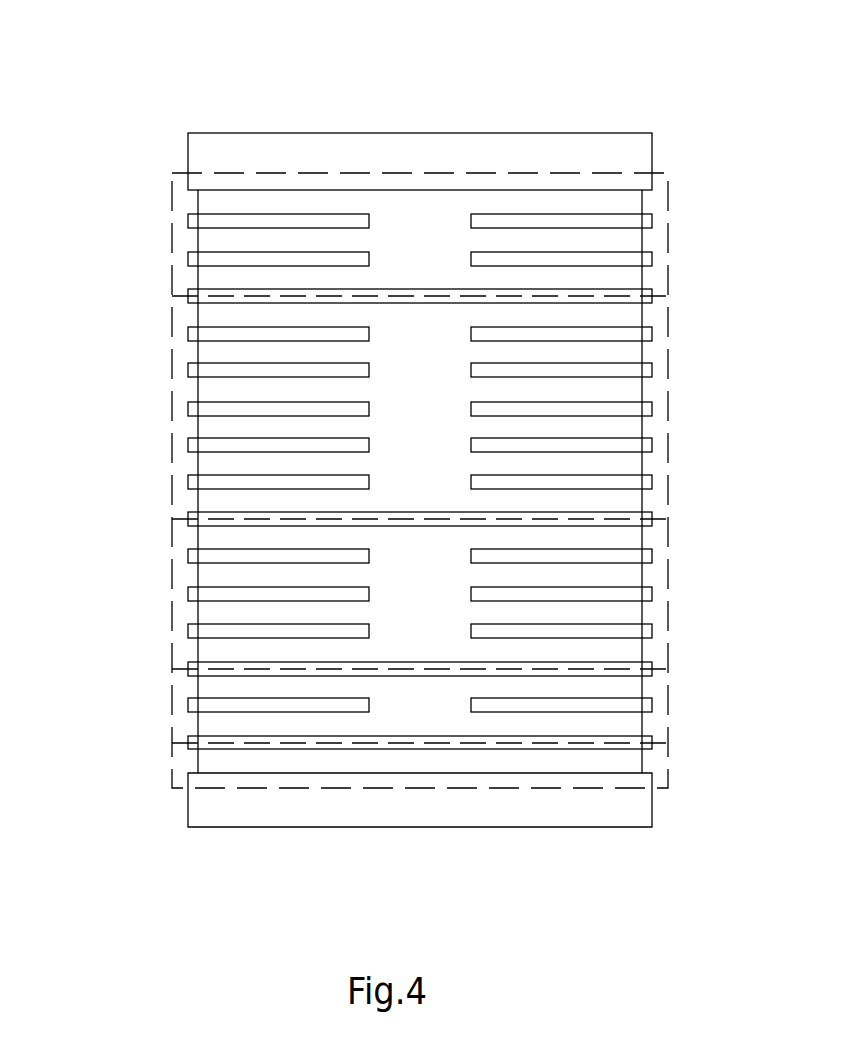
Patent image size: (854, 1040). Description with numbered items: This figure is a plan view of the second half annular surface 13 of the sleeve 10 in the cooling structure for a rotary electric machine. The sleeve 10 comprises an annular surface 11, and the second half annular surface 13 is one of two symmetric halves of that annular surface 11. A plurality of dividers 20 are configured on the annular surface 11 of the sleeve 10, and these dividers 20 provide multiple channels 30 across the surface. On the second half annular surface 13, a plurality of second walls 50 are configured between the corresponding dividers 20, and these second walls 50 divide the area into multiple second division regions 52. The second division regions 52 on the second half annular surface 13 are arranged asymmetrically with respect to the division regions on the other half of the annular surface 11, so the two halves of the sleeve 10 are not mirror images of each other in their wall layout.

The sleeve 10 is at (628, 148).
The annular surface 11 is at (420, 424).
The second half annular surface 13 is at (422, 217).
The dividers 20 is at (630, 222).
The channels 30 is at (207, 202).
The second walls 50 is at (418, 302).
The second division regions 52 is at (668, 272).